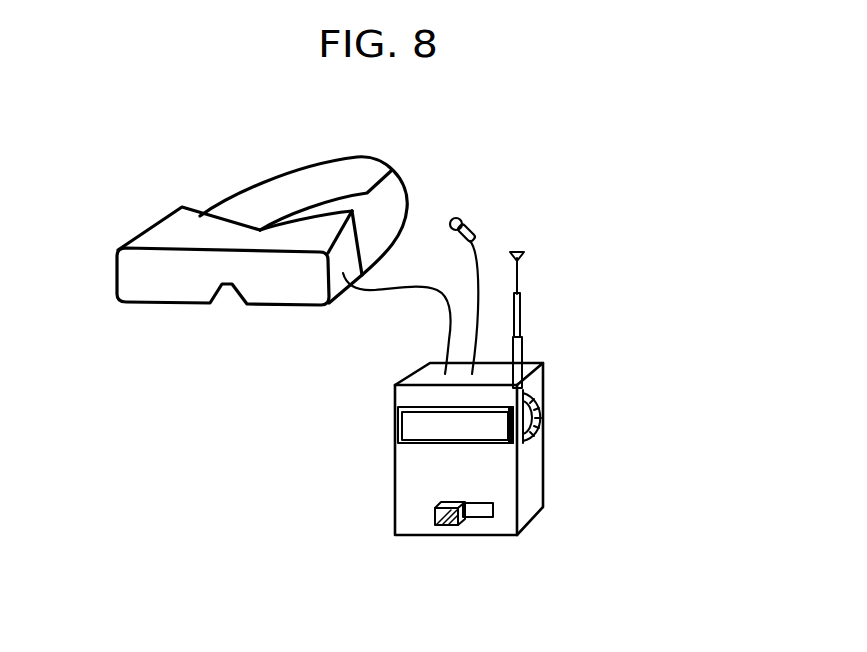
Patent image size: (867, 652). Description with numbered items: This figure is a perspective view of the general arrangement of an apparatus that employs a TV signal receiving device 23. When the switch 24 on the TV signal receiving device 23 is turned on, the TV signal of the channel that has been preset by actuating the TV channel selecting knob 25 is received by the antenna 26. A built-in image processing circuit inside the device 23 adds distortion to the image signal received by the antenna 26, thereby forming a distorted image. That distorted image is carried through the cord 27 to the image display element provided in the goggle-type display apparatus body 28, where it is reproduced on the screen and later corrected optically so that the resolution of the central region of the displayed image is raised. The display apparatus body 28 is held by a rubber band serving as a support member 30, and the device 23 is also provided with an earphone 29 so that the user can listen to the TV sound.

The TV signal receiving device 23 is at (532, 495).
The switch 24 is at (448, 526).
The TV channel selecting knob 25 is at (537, 435).
The antenna 26 is at (522, 280).
The cord 27 is at (400, 287).
The goggle-type display apparatus body 28 is at (121, 287).
The earphone 29 is at (460, 216).
The support member 30 is at (263, 181).